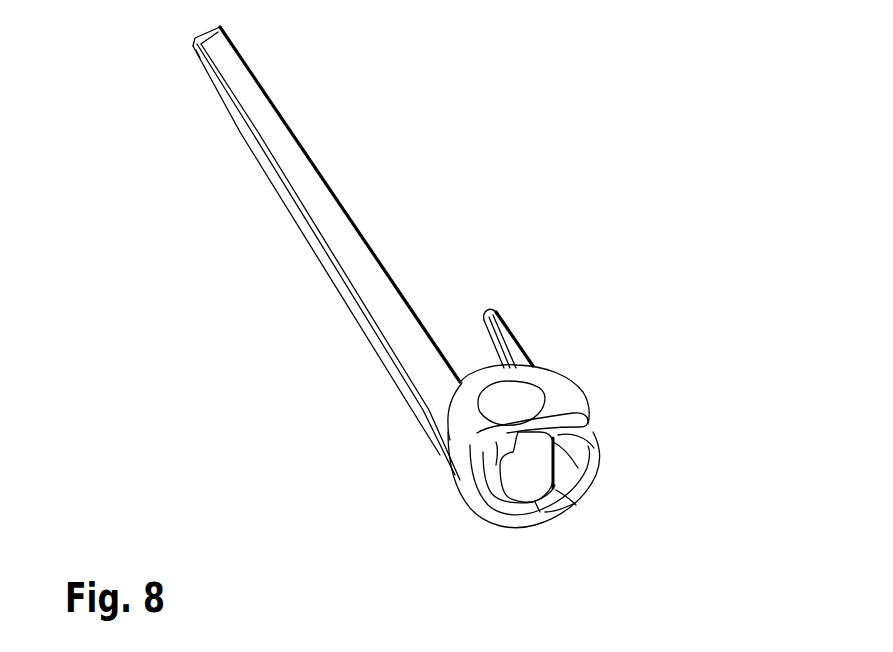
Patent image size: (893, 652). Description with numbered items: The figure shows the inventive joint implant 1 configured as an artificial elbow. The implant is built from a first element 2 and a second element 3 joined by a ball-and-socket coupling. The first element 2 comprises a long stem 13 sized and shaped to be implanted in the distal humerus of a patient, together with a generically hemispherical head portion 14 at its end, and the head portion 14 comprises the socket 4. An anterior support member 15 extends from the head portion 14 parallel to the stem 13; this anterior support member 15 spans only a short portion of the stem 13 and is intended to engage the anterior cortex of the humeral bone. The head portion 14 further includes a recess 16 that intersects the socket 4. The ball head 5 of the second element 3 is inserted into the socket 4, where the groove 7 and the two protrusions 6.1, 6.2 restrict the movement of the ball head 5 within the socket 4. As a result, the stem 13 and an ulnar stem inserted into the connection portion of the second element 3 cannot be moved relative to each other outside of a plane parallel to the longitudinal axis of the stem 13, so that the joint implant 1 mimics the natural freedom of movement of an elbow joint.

The joint implant 1 is at (435, 324).
The first element 2 is at (292, 253).
The second element 3 is at (577, 489).
The socket 4 is at (584, 466).
The ball head 5 is at (517, 478).
The protrusion 6.1 is at (540, 503).
The protrusion 6.2 is at (490, 437).
The groove 7 is at (555, 512).
The stem 13 is at (238, 132).
The head portion 14 is at (584, 381).
The anterior support member 15 is at (497, 310).
The recess 16 is at (597, 444).